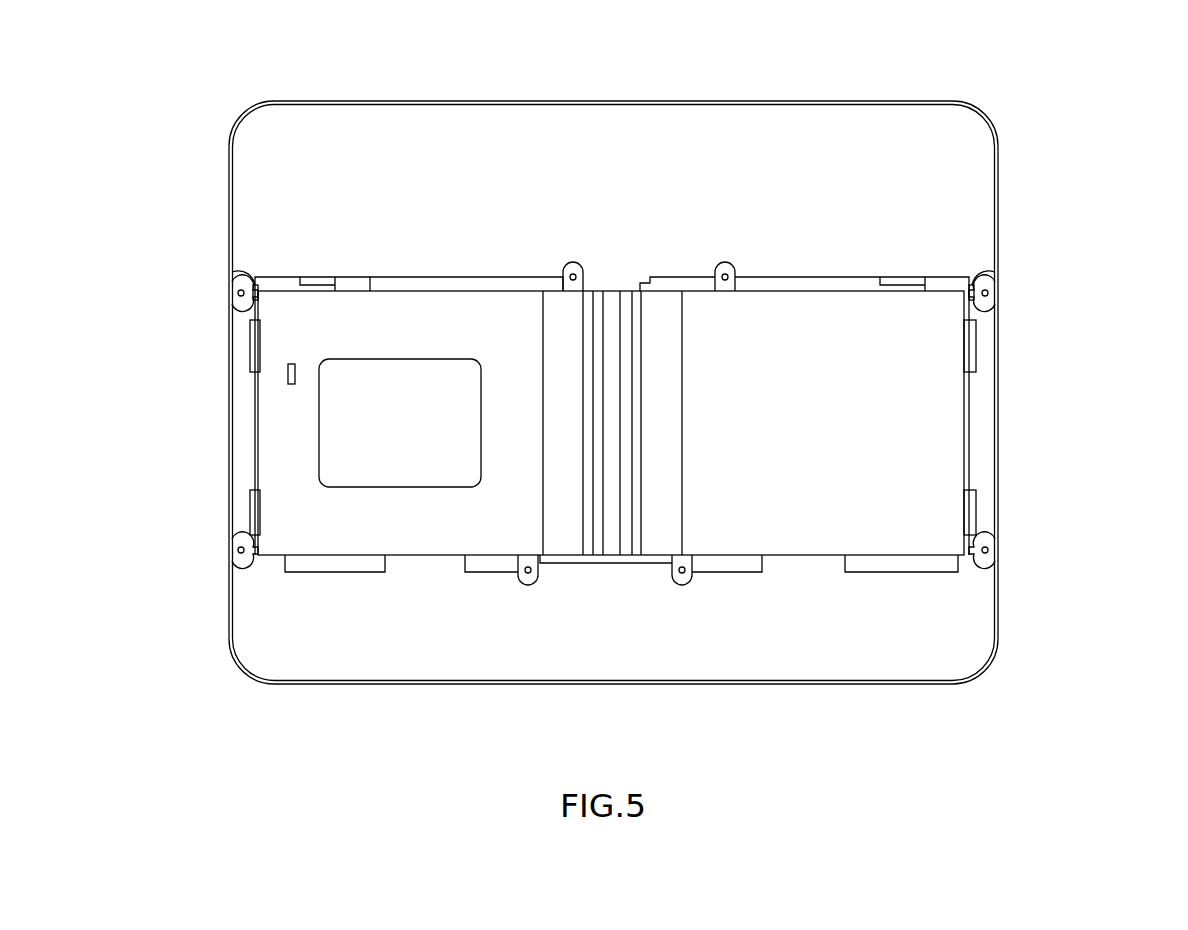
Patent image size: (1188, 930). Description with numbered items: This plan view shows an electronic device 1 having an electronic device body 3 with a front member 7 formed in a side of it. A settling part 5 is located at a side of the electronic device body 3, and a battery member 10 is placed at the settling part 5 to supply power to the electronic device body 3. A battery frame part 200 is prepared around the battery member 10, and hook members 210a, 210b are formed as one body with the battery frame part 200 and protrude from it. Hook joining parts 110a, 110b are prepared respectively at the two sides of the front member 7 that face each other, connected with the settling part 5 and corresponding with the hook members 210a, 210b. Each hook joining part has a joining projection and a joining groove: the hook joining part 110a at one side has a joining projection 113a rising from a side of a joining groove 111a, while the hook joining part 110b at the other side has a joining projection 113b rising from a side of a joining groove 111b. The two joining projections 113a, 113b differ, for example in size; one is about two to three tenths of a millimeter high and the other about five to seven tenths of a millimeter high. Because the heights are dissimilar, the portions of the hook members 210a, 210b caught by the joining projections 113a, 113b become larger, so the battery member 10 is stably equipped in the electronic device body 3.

The electronic device 1 is at (637, 44).
The electronic device body 3 is at (982, 110).
The front member 7 is at (960, 190).
The settling part 5 is at (260, 438).
The battery member 10 is at (950, 428).
The battery frame part 200 is at (727, 563).
The hook joining part 110a is at (150, 285).
The joining projection 113a is at (233, 278).
The joining groove 111a is at (233, 291).
The hook member 210a is at (238, 297).
The hook joining part 110b is at (1078, 283).
The joining projection 113b is at (975, 280).
The joining groove 111b is at (990, 293).
The hook member 210b is at (990, 300).